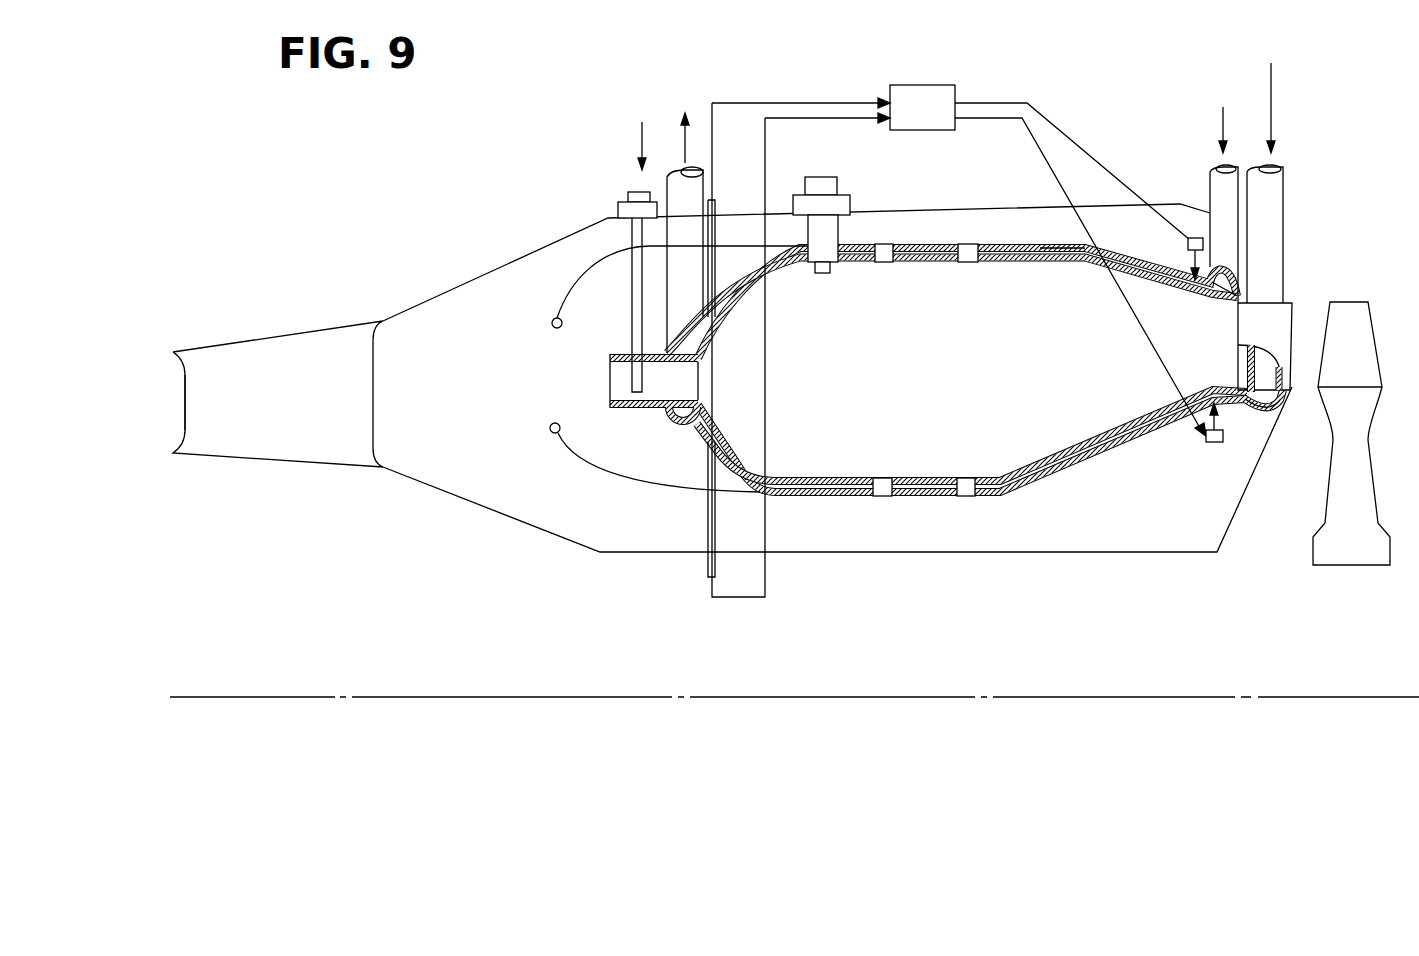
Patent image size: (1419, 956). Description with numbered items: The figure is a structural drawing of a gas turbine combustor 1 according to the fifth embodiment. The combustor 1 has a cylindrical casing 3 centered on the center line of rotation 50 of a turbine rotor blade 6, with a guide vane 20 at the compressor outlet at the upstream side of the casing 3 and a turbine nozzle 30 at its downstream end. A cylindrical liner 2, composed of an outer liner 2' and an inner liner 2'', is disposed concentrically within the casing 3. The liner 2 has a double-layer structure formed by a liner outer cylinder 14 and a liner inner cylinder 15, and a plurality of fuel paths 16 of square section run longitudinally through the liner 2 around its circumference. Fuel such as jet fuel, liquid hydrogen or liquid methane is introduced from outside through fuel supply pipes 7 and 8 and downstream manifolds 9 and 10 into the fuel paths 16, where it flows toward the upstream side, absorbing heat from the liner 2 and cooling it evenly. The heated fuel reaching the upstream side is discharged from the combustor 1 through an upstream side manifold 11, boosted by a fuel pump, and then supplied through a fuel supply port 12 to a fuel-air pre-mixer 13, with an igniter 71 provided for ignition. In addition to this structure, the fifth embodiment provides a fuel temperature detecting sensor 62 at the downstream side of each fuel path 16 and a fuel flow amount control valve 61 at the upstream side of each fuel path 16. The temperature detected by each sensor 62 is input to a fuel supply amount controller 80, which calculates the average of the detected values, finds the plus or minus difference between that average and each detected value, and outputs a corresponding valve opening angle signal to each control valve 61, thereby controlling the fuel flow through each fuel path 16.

The gas turbine combustor 1 is at (442, 297).
The liner 2 is at (967, 260).
The outer liner 2' is at (1052, 209).
The inner liner 2'' is at (972, 507).
The casing 3 is at (1117, 553).
The turbine rotor blade 6 is at (1350, 318).
The fuel supply pipe 7 is at (1210, 185).
The fuel supply pipe 8 is at (1270, 190).
The downstream manifold 9 is at (1225, 283).
The downstream manifold 10 is at (1262, 403).
The upstream side manifold 11 is at (687, 412).
The fuel supply port 12 is at (625, 195).
The fuel-air pre-mixer 13 is at (620, 408).
The liner outer cylinder 14 is at (940, 245).
The liner inner cylinder 15 is at (918, 262).
The fuel path 16 is at (1010, 262).
The guide vane 20 is at (302, 436).
The turbine nozzle 30 is at (1278, 330).
The center line of rotation 50 is at (1200, 697).
The fuel flow amount control valve 61 is at (1178, 233).
The fuel temperature detecting sensor 62 is at (714, 200).
The igniter 71 is at (828, 177).
The fuel supply amount controller 80 is at (940, 85).